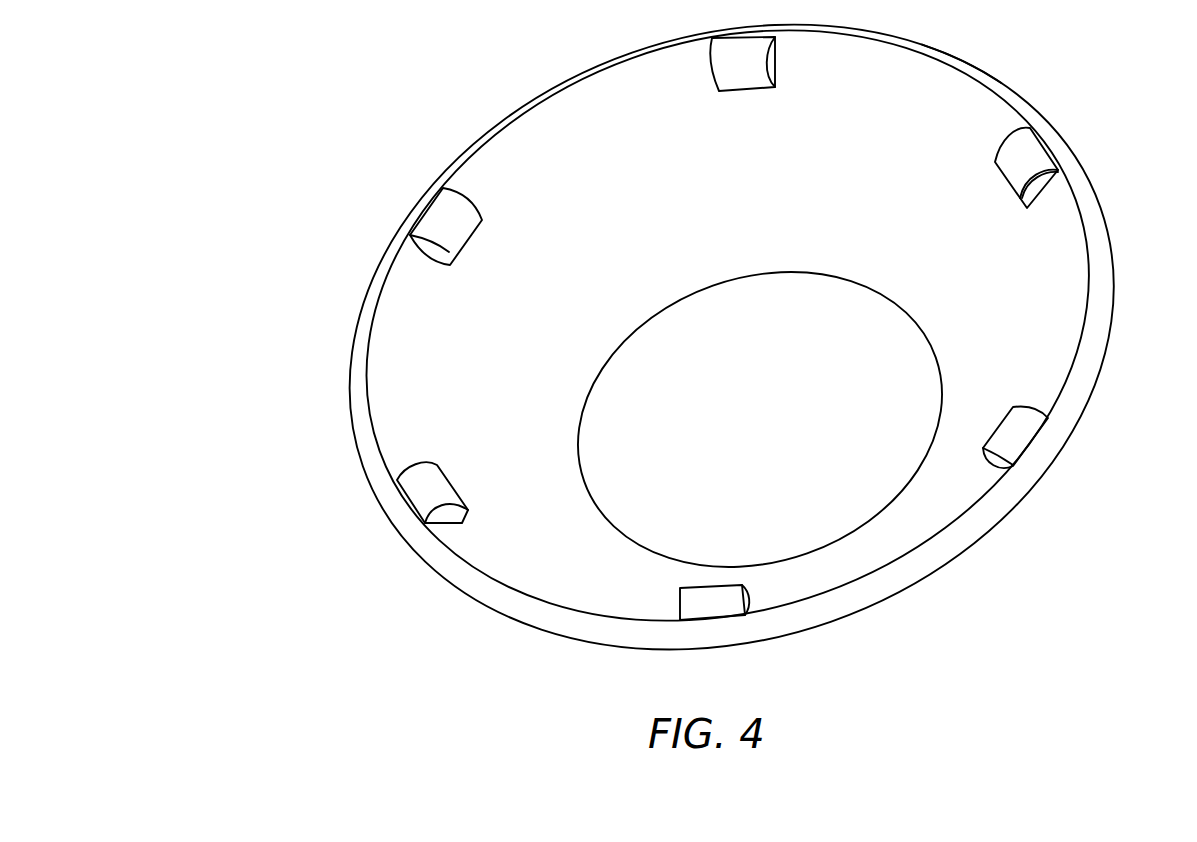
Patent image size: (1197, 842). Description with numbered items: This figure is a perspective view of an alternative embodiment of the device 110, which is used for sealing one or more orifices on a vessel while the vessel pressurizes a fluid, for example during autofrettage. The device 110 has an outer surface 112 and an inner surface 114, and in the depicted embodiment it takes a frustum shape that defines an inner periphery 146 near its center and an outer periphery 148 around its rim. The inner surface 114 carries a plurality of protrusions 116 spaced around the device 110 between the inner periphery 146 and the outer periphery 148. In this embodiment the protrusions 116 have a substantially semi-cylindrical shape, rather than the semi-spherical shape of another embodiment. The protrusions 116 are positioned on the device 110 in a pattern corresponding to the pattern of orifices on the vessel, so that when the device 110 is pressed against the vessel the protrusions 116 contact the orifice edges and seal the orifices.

The device 110 is at (277, 82).
The outer surface 112 is at (358, 450).
The inner surface 114 is at (420, 342).
The protrusions 116 is at (450, 513).
The inner periphery 146 is at (940, 372).
The outer periphery 148 is at (972, 77).